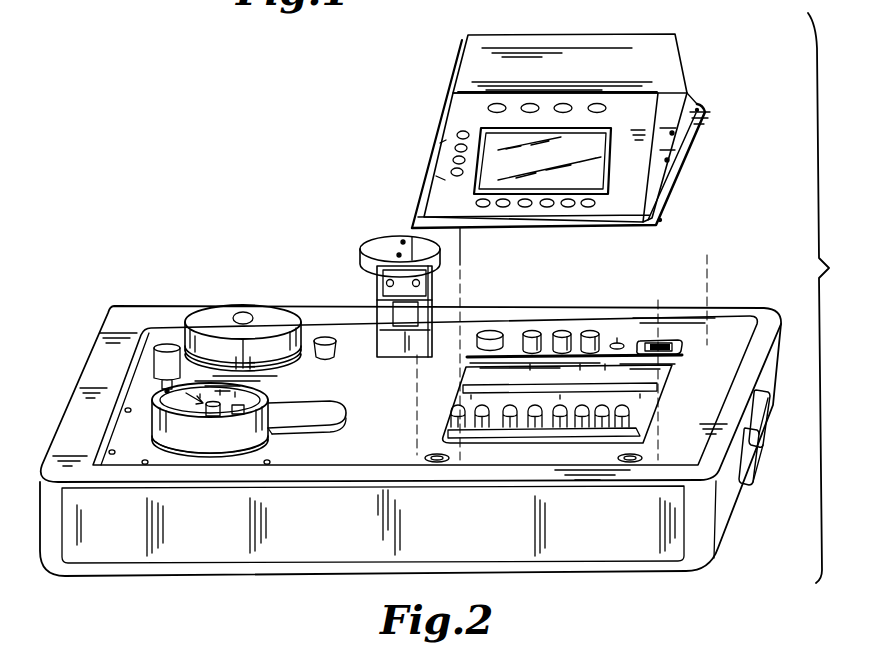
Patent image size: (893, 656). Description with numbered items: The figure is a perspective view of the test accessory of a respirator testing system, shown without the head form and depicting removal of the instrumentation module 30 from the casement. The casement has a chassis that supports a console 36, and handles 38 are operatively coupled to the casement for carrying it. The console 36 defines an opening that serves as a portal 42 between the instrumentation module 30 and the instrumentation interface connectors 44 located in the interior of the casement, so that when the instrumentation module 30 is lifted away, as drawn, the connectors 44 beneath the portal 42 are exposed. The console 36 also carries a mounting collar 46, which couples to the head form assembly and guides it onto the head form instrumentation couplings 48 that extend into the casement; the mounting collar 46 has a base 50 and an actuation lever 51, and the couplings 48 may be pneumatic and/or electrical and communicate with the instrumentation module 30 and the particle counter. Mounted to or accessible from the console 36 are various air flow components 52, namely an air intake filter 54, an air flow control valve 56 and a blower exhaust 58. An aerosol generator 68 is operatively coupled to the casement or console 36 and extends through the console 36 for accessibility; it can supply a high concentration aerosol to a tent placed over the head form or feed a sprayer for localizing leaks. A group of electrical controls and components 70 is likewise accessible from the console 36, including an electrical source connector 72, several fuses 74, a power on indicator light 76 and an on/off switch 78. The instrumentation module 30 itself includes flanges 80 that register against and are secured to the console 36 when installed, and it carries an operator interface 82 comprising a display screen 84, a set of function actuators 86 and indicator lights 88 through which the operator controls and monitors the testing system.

The instrumentation module 30 is at (612, 32).
The console 36 is at (385, 432).
The handles 38 is at (753, 452).
The portal 42 is at (736, 346).
The instrumentation interface connectors 44 is at (540, 446).
The mounting collar 46 is at (150, 428).
The head form instrumentation couplings 48 is at (88, 403).
The base 50 is at (227, 460).
The actuation lever 51 is at (300, 452).
The air flow components 52 is at (318, 272).
The air intake filter 54 is at (243, 307).
The air flow control valve 56 is at (327, 338).
The blower exhaust 58 is at (148, 358).
The aerosol generator 68 is at (441, 252).
The electrical controls and components 70 is at (557, 358).
The electrical source connector 72 is at (491, 330).
The fuses 74 is at (590, 333).
The power on indicator light 76 is at (617, 342).
The on/off switch 78 is at (655, 340).
The flanges 80 is at (410, 222).
The operator interface 82 is at (631, 120).
The display screen 84 is at (479, 128).
The function actuators 86 is at (440, 152).
The indicator lights 88 is at (560, 92).